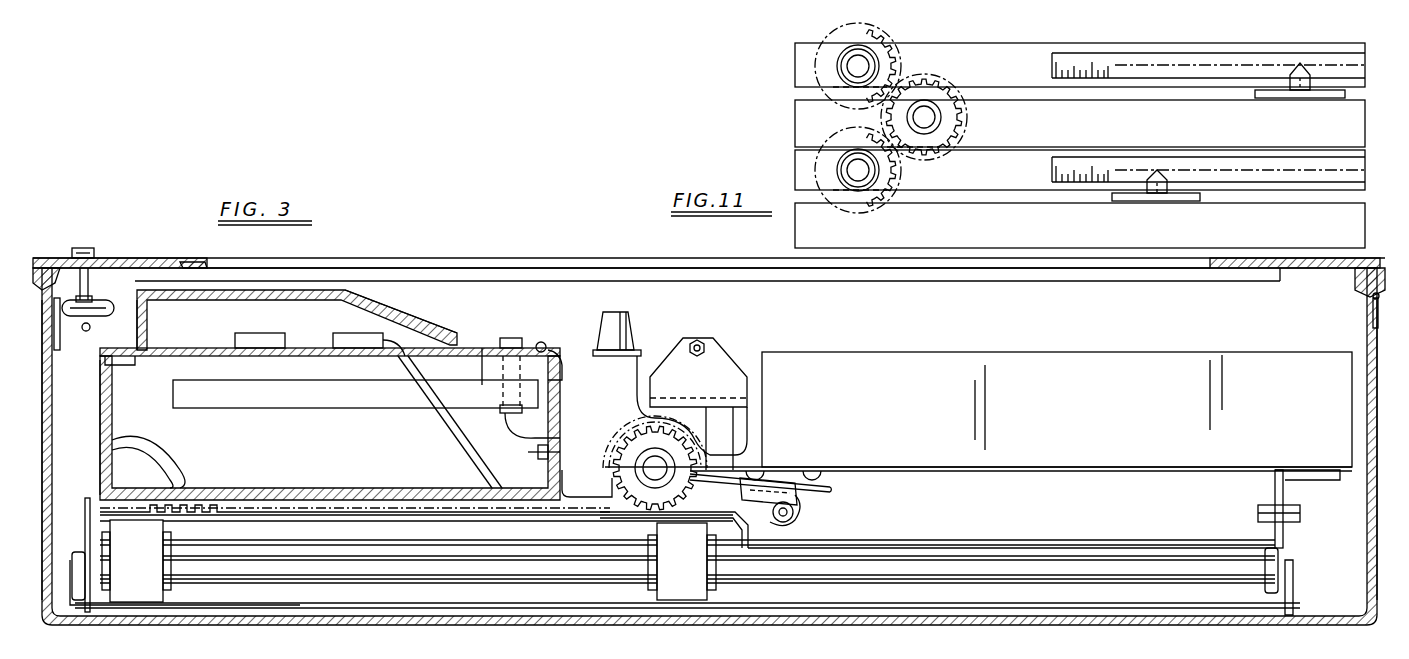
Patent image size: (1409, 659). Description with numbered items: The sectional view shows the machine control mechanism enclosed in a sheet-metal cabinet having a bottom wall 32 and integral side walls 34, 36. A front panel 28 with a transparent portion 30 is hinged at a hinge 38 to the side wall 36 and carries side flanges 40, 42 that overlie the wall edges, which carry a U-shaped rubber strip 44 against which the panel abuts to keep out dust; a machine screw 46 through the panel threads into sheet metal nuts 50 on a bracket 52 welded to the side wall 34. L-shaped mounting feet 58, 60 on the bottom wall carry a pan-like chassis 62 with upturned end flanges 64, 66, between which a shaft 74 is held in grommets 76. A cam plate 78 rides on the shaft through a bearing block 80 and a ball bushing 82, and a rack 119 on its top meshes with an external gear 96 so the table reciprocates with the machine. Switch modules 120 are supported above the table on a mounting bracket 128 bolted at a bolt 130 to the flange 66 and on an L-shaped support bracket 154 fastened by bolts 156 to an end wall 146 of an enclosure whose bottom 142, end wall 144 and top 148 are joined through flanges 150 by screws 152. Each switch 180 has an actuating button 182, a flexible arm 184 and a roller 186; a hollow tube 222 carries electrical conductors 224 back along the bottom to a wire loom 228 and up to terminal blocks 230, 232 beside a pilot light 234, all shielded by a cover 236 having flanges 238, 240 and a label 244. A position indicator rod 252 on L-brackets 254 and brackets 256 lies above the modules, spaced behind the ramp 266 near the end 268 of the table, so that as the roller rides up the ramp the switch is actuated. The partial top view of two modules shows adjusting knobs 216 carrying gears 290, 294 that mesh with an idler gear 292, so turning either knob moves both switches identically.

In FIG. 3, the front panel 28 is at (1347, 275).
In FIG. 3, the transparent portion 30 is at (703, 270).
In FIG. 3, the bottom wall 32 is at (1060, 626).
In FIG. 3, the side wall 34 is at (50, 410).
In FIG. 3, the side wall 36 is at (1370, 505).
In FIG. 3, the hinge 38 is at (1370, 297).
In FIG. 3, the side flange 40 is at (1365, 305).
In FIG. 3, the side flange 42 is at (42, 262).
In FIG. 3, the U-shaped strip 44 is at (92, 275).
In FIG. 3, the machine screw 46 is at (95, 250).
In FIG. 3, the sheet metal nuts 50 is at (75, 325).
In FIG. 3, the bracket 52 is at (57, 348).
In FIG. 3, the L-shaped mounting foot 58 is at (1293, 596).
In FIG. 3, the L-shaped mounting foot 60 is at (62, 612).
In FIG. 3, the chassis 62 is at (985, 608).
In FIG. 3, the end flange 64 is at (86, 500).
In FIG. 3, the end flange 66 is at (1258, 530).
In FIG. 3, the shaft 74 is at (1072, 555).
In FIG. 3, the grommets 76 is at (80, 562).
In FIG. 3, the cam plate 78 is at (345, 521).
In FIG. 3, the bearing block 80 is at (150, 605).
In FIG. 3, the ball bushing 82 is at (172, 594).
In FIG. 3, the external gear 96 is at (618, 452).
In FIG. 3, the rack 119 is at (230, 500).
In FIG. 3, the switch module 120 is at (1057, 409).
In FIG. 3, the mounting bracket 128 is at (1300, 472).
In FIG. 3, the bolt 130 is at (1262, 515).
In FIG. 3, the bottom 142 is at (135, 495).
In FIG. 3, the end wall 144 is at (100, 438).
In FIG. 3, the end wall 146 is at (480, 448).
In FIG. 3, the top 148 is at (205, 345).
In FIG. 3, the flanges 150 is at (120, 362).
In FIG. 3, the screws 152 is at (560, 330).
In FIG. 3, the L-shaped support bracket 154 is at (582, 478).
In FIG. 3, the bolts 156 is at (538, 456).
In FIG. 3, the switch 180 is at (830, 470).
In FIG. 3, the actuating button 182 is at (832, 489).
In FIG. 3, the flexible arm 184 is at (768, 493).
In FIG. 3, the roller 186 is at (795, 512).
In FIG. 3, the adjusting knob 216 is at (670, 375).
In FIG. 3, the hollow tube 222 is at (330, 405).
In FIG. 3, the electrical conductors 224 is at (135, 452).
In FIG. 3, the wire loom 228 is at (445, 425).
In FIG. 3, the terminal block 230 is at (355, 335).
In FIG. 3, the terminal block 232 is at (260, 340).
In FIG. 3, the pilot light 234 is at (512, 338).
In FIG. 3, the cover 236 is at (300, 292).
In FIG. 3, the flange 238 is at (142, 335).
In FIG. 3, the flange 240 is at (482, 345).
In FIG. 3, the label 244 is at (440, 310).
In FIG. 3, the position indicator rod 252 is at (702, 342).
In FIG. 3, the L-bracket 254 is at (735, 370).
In FIG. 3, the bracket 256 is at (730, 432).
In FIG. 3, the ramp 266 is at (765, 527).
In FIG. 3, the end 268 is at (850, 548).
In FIG. 11, the gear 290 is at (885, 58).
In FIG. 11, the gear 292 is at (953, 125).
In FIG. 11, the gear 294 is at (880, 197).